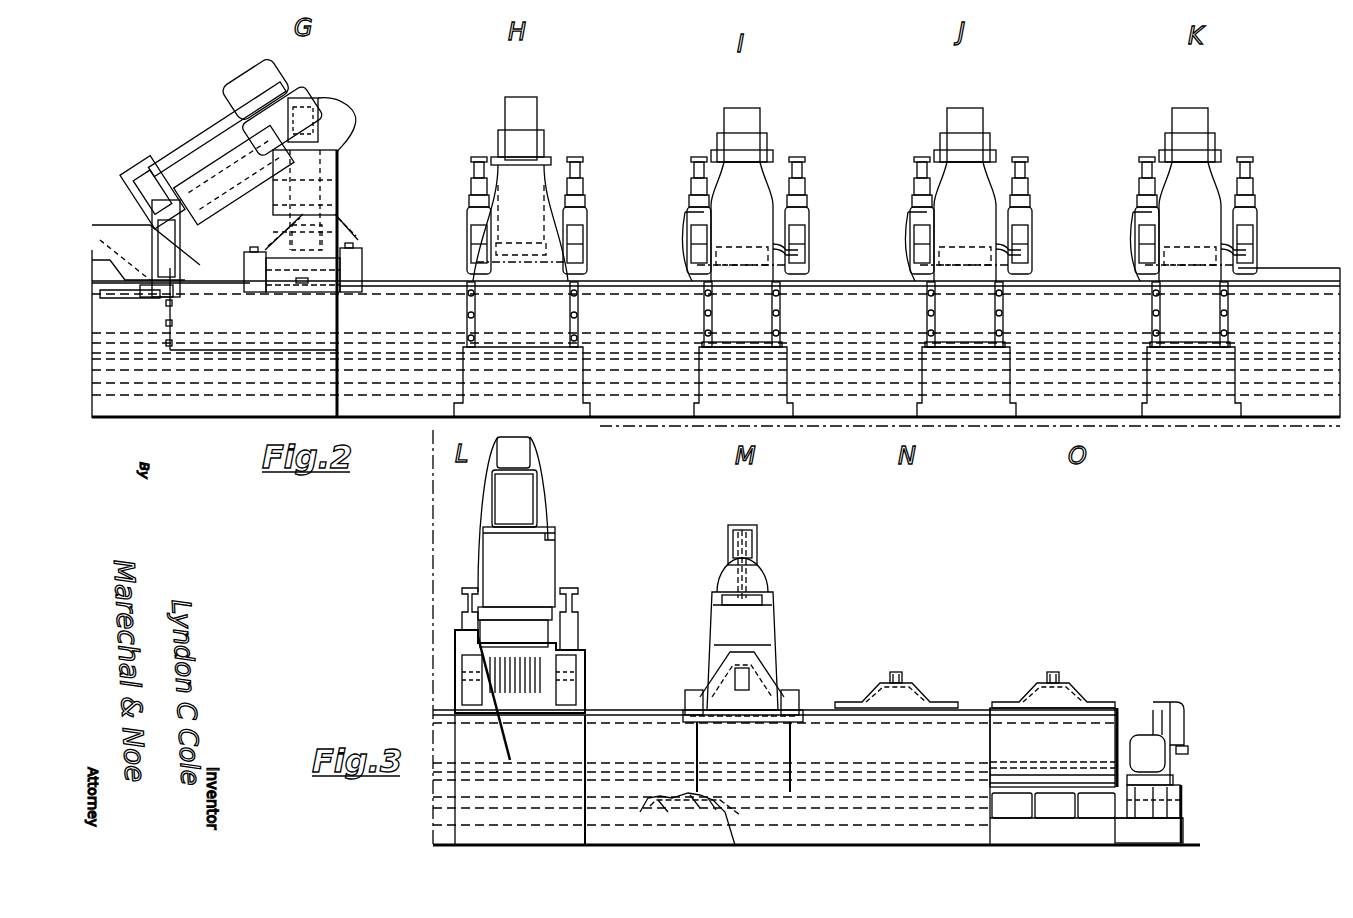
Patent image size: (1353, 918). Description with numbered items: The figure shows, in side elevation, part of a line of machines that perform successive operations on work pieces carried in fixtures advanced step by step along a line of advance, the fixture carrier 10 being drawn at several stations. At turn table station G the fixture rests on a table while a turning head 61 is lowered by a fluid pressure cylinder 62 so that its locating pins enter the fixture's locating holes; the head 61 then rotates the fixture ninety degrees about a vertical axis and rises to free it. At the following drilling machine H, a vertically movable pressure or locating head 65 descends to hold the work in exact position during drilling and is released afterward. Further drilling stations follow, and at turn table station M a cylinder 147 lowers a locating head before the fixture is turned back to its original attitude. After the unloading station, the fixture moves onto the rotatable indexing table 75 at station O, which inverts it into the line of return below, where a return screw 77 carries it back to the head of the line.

In FIG. 2, the mold carrier base 10 is at (338, 247).
In FIG. 3, the mold carrier base 10 is at (909, 681).
In FIG. 2, the turning head 61 is at (332, 229).
In FIG. 2, the fluid pressure cylinder 62 is at (312, 97).
In FIG. 2, the pressure or locating head 65 is at (478, 252).
In FIG. 3, the rotatable indexing table 75 is at (1103, 737).
In FIG. 3, the return screw 77 is at (681, 806).
In FIG. 3, the cylinder 147 is at (755, 540).